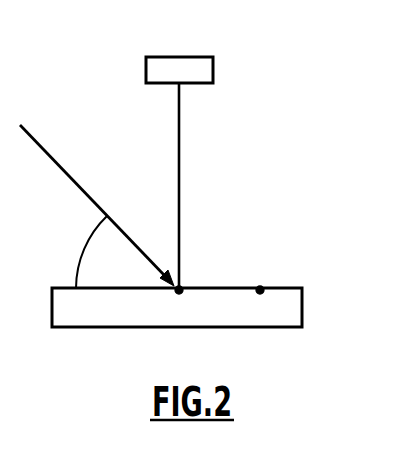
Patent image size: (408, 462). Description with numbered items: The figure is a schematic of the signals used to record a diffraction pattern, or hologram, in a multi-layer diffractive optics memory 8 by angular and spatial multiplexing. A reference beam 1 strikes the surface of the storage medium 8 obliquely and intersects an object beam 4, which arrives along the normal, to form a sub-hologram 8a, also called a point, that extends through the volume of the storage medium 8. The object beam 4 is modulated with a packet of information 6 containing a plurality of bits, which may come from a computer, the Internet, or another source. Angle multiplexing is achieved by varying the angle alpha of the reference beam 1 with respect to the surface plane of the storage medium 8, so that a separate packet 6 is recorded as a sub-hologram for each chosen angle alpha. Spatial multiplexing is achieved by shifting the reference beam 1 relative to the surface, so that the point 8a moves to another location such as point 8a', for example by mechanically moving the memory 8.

The reference beam 1 is at (43, 147).
The object beam 4 is at (179, 150).
The packet of information 6 is at (163, 57).
The diffractive optics memory 8 is at (248, 315).
The sub-hologram 8a is at (225, 265).
The shifted point 8a' is at (300, 276).
The angle of the reference beam alpha is at (83, 252).